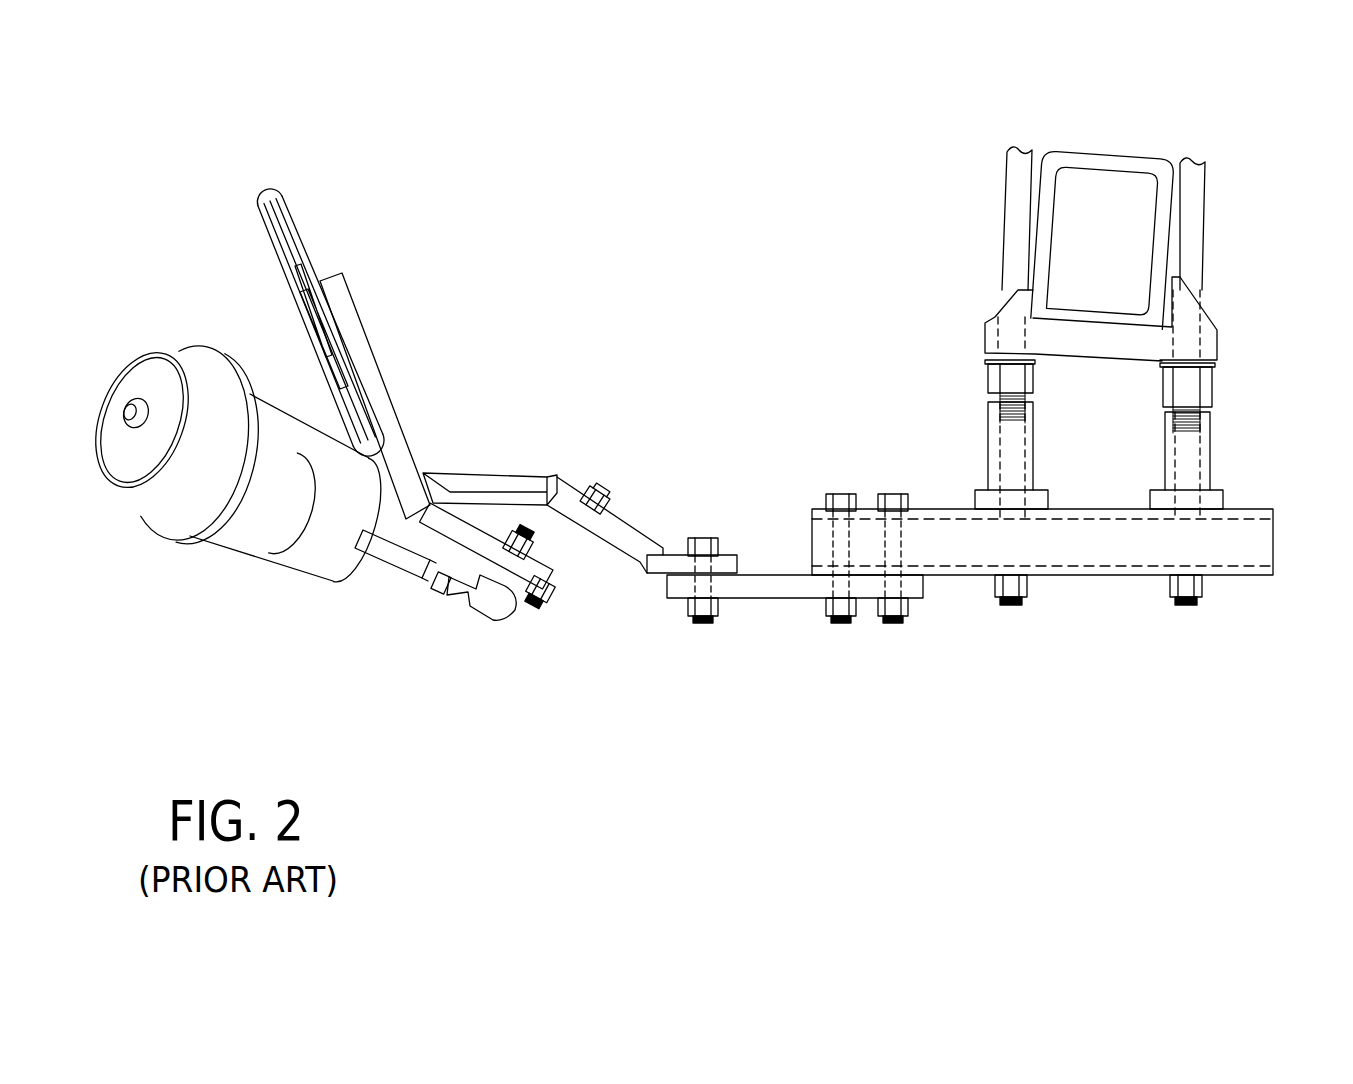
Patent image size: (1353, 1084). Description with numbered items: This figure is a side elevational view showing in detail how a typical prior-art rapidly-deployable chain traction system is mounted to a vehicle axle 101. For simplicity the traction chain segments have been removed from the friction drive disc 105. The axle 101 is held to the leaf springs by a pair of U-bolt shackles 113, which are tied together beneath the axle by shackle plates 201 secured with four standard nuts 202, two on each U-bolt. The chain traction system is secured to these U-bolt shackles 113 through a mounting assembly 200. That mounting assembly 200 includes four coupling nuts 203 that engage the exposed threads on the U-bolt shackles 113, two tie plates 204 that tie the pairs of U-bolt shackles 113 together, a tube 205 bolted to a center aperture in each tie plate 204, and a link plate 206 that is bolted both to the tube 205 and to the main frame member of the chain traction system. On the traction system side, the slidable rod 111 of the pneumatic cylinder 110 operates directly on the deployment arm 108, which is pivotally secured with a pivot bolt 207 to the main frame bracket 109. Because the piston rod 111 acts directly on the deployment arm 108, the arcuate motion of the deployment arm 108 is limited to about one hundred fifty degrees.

The axle 101 is at (1087, 162).
The friction drive disc 105 is at (262, 203).
The deployment arm 108 is at (388, 424).
The main frame bracket 109 is at (622, 527).
The pneumatic cylinder 110 is at (297, 561).
The slidable rod 111 is at (410, 564).
The U-bolt shackles 113 is at (1012, 262).
The mounting assembly 200 is at (798, 352).
The shackle plates 201 is at (1125, 348).
The standard nuts 202 is at (992, 378).
The coupling nuts 203 is at (1168, 441).
The tie plates 204 is at (1160, 498).
The tube 205 is at (980, 553).
The link plate 206 is at (794, 588).
The pivot bolt 207 is at (597, 492).